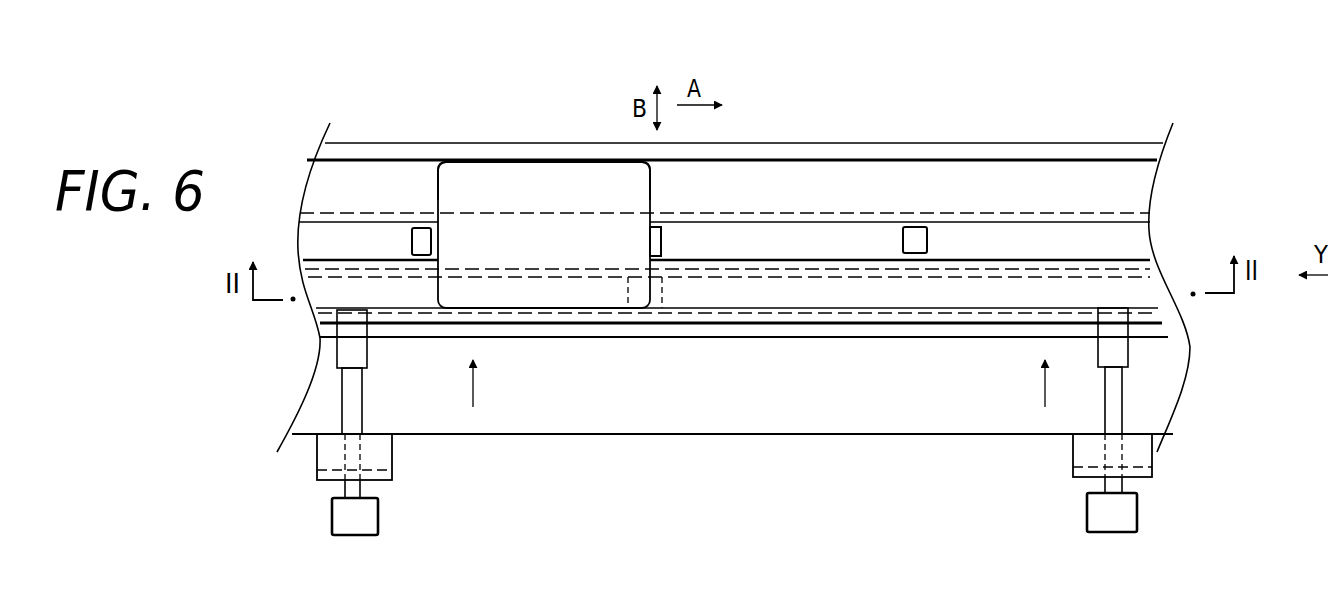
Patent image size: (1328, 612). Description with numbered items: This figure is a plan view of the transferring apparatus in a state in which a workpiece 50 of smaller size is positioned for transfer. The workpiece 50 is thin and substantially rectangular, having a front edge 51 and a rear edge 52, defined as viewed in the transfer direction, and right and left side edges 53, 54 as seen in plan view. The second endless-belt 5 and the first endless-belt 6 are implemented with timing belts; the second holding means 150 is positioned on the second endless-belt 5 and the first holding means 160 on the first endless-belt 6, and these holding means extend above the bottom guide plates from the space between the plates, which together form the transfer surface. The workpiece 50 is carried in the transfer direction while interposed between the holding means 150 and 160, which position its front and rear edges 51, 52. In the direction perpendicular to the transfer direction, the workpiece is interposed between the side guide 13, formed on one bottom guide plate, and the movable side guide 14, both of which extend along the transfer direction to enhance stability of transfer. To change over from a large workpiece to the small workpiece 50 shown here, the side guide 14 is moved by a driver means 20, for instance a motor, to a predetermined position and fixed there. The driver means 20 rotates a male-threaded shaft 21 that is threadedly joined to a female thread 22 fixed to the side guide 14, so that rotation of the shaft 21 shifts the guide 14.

The second endless-belt 5 is at (988, 240).
The first endless-belt 6 is at (808, 293).
The side guide 13 is at (1090, 147).
The side guide 14 is at (1155, 328).
The driver means 20 is at (347, 516).
The male-threaded shaft 21 is at (350, 410).
The female thread 22 is at (345, 350).
The workpiece 50 is at (548, 186).
The front edge 51 is at (653, 187).
The rear edge 52 is at (440, 182).
The side edge 53 is at (531, 307).
The side edge 54 is at (488, 161).
The second holding means 150 is at (420, 232).
The first holding means 160 is at (664, 241).